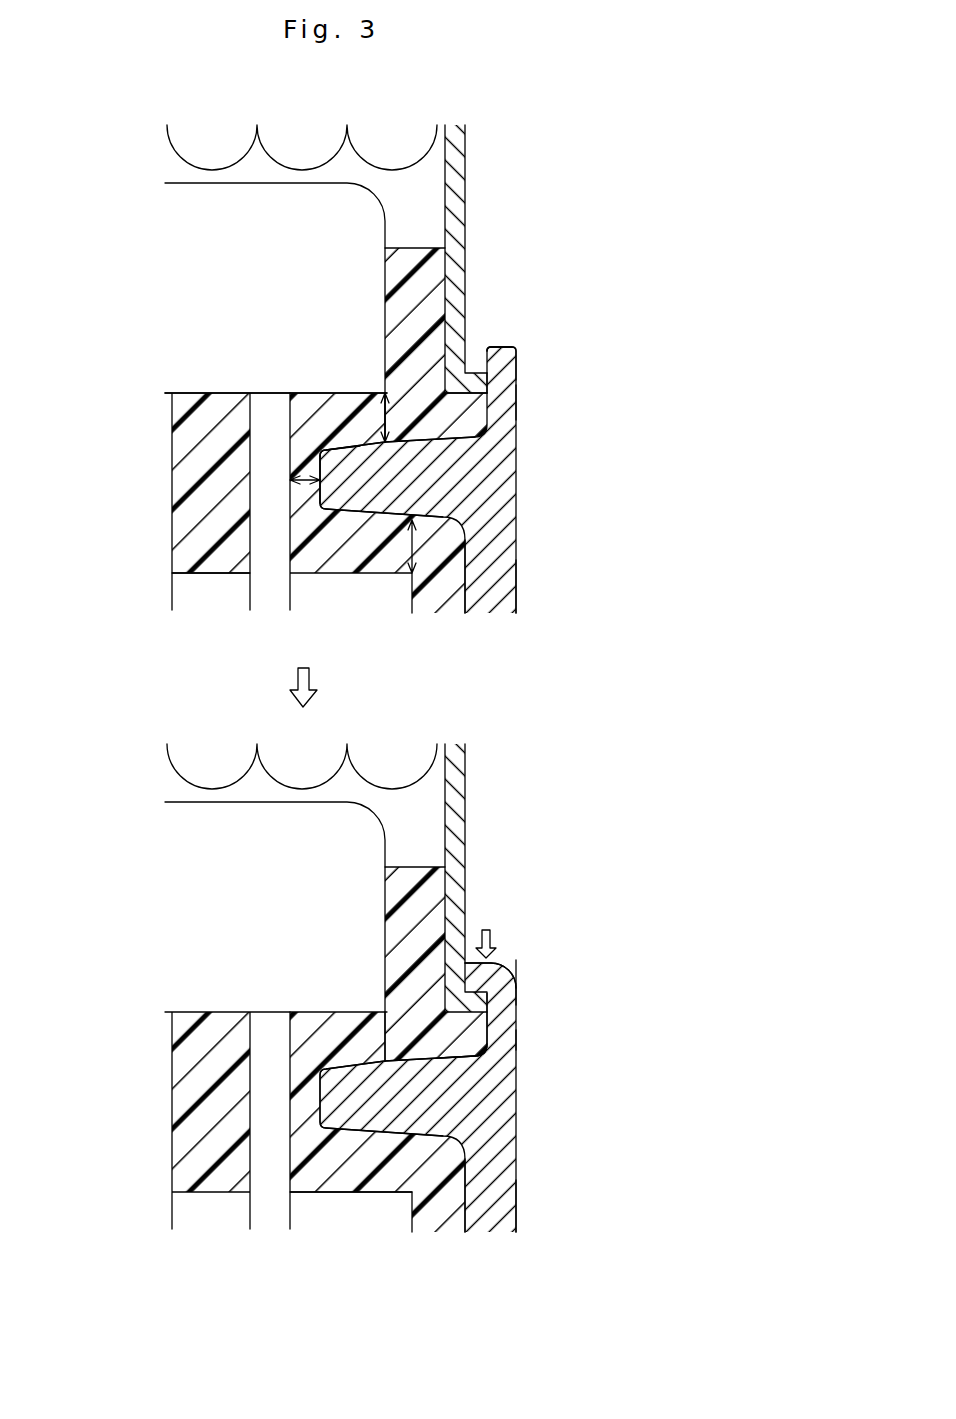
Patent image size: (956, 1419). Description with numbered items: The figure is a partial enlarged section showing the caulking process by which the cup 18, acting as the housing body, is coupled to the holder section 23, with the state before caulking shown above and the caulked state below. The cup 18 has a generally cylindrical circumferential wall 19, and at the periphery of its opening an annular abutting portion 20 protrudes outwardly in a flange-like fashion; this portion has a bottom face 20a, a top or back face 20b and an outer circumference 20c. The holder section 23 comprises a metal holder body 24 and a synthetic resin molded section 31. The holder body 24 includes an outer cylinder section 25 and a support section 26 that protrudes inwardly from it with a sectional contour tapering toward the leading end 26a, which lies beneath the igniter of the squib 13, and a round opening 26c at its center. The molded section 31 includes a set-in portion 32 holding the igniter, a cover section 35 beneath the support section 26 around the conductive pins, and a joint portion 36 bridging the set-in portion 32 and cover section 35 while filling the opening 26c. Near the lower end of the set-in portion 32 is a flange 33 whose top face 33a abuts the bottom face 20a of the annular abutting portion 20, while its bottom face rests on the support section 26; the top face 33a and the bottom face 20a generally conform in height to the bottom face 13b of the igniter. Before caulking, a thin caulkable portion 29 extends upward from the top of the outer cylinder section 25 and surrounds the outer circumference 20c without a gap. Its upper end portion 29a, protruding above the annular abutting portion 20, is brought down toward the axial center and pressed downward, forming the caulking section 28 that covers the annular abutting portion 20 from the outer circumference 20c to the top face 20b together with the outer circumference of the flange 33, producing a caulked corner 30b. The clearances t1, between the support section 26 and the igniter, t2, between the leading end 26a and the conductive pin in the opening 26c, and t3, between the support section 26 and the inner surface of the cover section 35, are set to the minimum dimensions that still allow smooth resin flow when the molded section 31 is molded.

The squib 13 is at (187, 175).
The bottom face of the igniter 13b is at (172, 399).
The cup 18 is at (485, 156).
The circumferential wall 19 is at (456, 190).
The annular abutting portion 20 is at (480, 1010).
The bottom face of the annular abutting portion 20a is at (508, 400).
The top face of the annular abutting portion 20b is at (470, 392).
The outer circumference of the annular abutting portion 20c is at (500, 382).
The holder section 23 is at (531, 593).
The holder body 24 is at (529, 515).
The outer cylinder section 25 is at (507, 575).
The support section 26 is at (465, 458).
The leading end of the support section 26a is at (320, 439).
The opening of the support section 26c is at (317, 472).
The caulking section 28 is at (500, 964).
The caulkable portion 29 is at (508, 333).
The upper end portion of the caulkable portion 29a is at (486, 378).
The crimped corner 30b is at (483, 1075).
The molded section 31 is at (386, 587).
The set-in portion 32 is at (405, 260).
The flange 33 is at (463, 410).
The top face of the flange 33a is at (455, 402).
The cover section 35 is at (220, 575).
The joint portion 36 is at (200, 492).
The clearance between support section and igniter t1 is at (395, 433).
The clearance between leading end of support section and conductive pin t2 is at (305, 487).
The clearance between support section and cover section inner surface t3 is at (420, 522).